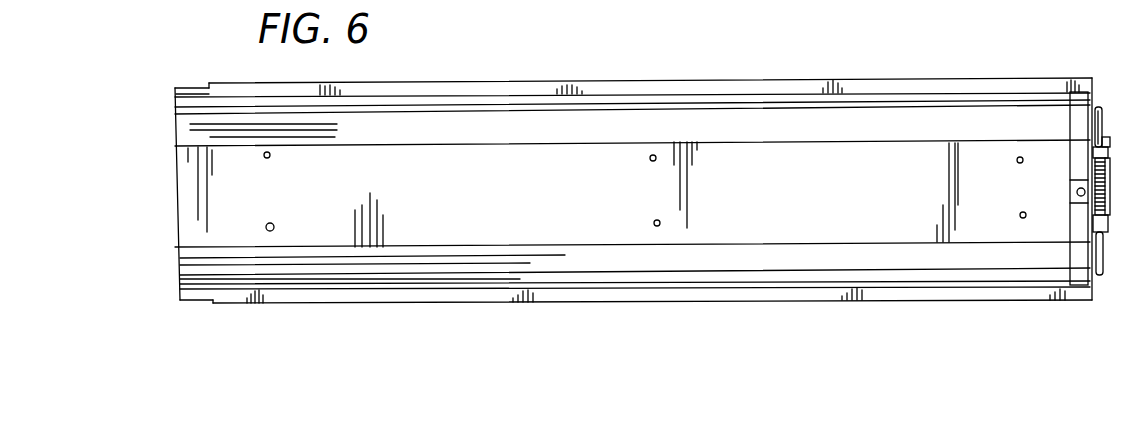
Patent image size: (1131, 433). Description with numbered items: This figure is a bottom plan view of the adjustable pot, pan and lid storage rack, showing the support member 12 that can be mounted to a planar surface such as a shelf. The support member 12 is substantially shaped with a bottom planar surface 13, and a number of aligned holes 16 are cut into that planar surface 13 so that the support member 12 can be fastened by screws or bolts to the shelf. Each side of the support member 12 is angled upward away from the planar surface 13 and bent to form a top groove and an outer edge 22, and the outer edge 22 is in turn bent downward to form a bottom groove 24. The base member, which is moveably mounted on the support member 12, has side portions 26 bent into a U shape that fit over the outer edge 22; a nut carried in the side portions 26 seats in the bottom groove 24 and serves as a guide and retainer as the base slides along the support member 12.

The support member 12 is at (185, 191).
The bottom planar surface 13 is at (607, 194).
The aligned holes 16 is at (272, 231).
The outer edge 22 is at (191, 86).
The bottom groove 24 is at (175, 93).
The side portions 26 is at (631, 302).